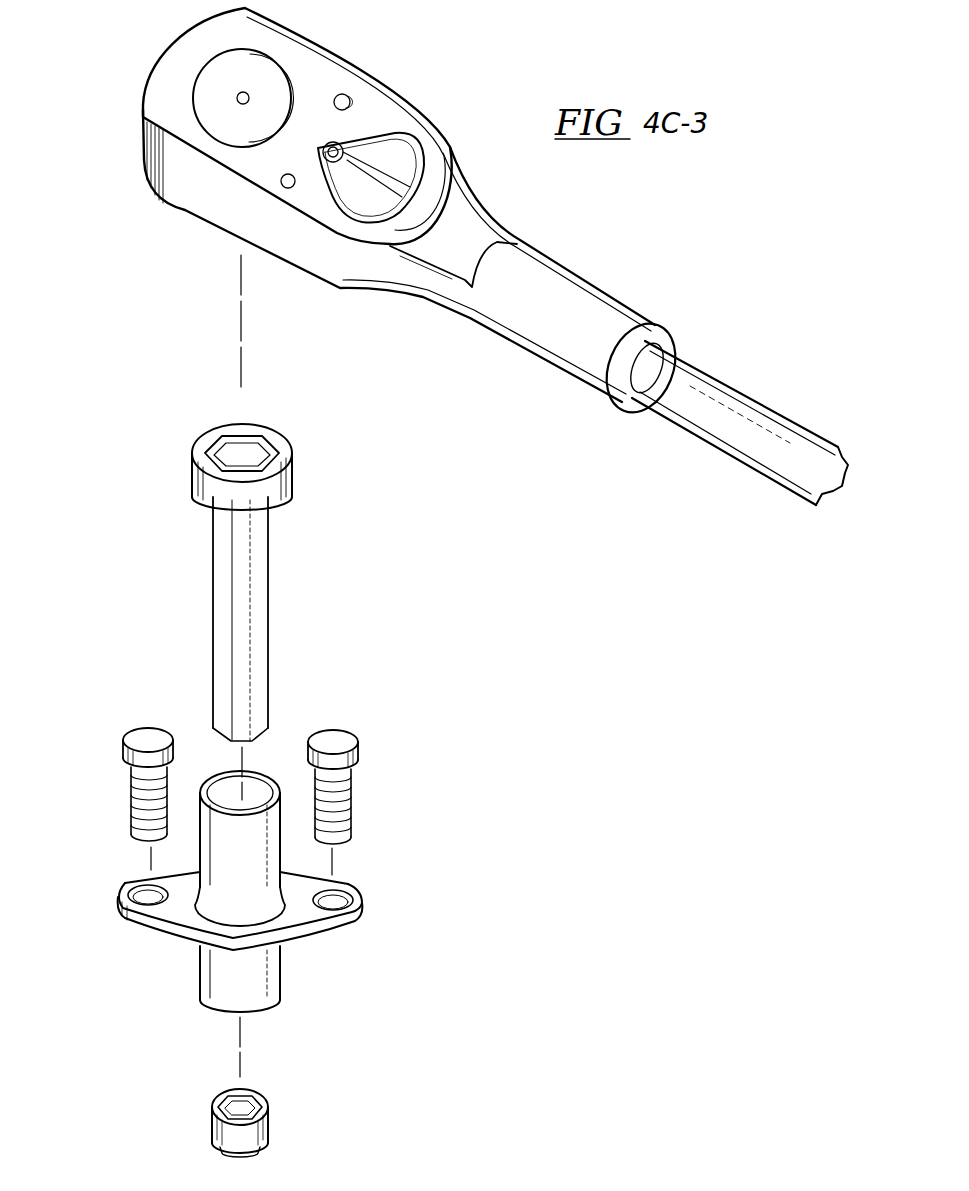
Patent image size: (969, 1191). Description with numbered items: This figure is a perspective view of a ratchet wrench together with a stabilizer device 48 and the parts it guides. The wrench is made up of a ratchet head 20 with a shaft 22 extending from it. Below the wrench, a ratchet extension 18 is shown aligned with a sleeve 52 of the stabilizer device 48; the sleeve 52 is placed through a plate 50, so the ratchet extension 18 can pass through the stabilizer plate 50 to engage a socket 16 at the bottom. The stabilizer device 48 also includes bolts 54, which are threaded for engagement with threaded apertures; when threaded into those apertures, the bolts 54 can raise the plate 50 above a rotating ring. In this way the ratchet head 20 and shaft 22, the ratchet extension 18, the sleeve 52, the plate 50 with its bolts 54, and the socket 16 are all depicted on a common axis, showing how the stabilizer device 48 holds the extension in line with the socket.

The socket 16 is at (265, 1100).
The ratchet extension 18 is at (258, 615).
The ratchet head 20 is at (283, 164).
The shaft 22 is at (723, 380).
The stabilizer device 48 is at (251, 902).
The plate 50 is at (363, 903).
The sleeve 52 is at (203, 975).
The bolts 54 is at (353, 790).